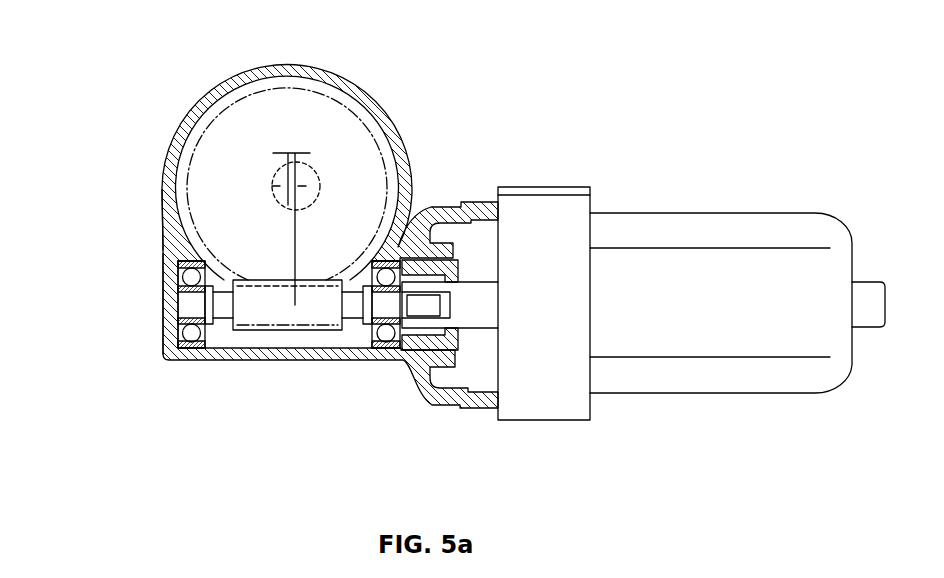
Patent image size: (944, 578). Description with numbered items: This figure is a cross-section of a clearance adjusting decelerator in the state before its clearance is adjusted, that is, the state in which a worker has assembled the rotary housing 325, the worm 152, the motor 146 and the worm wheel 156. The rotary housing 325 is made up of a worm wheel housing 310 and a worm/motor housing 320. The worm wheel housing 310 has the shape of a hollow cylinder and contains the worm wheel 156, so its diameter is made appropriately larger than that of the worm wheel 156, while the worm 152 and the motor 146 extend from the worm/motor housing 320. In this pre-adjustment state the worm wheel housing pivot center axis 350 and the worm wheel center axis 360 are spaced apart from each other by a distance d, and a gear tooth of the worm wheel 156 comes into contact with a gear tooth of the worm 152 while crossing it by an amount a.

The worm wheel 156 is at (345, 78).
The motor 146 is at (538, 196).
The worm 152 is at (315, 313).
The worm wheel housing pivot center axis 350 is at (283, 192).
The worm wheel center axis 360 is at (300, 180).
The worm wheel housing 310 is at (167, 200).
The worm/motor housing 320 is at (165, 292).
The rotary housing 325 is at (83, 208).